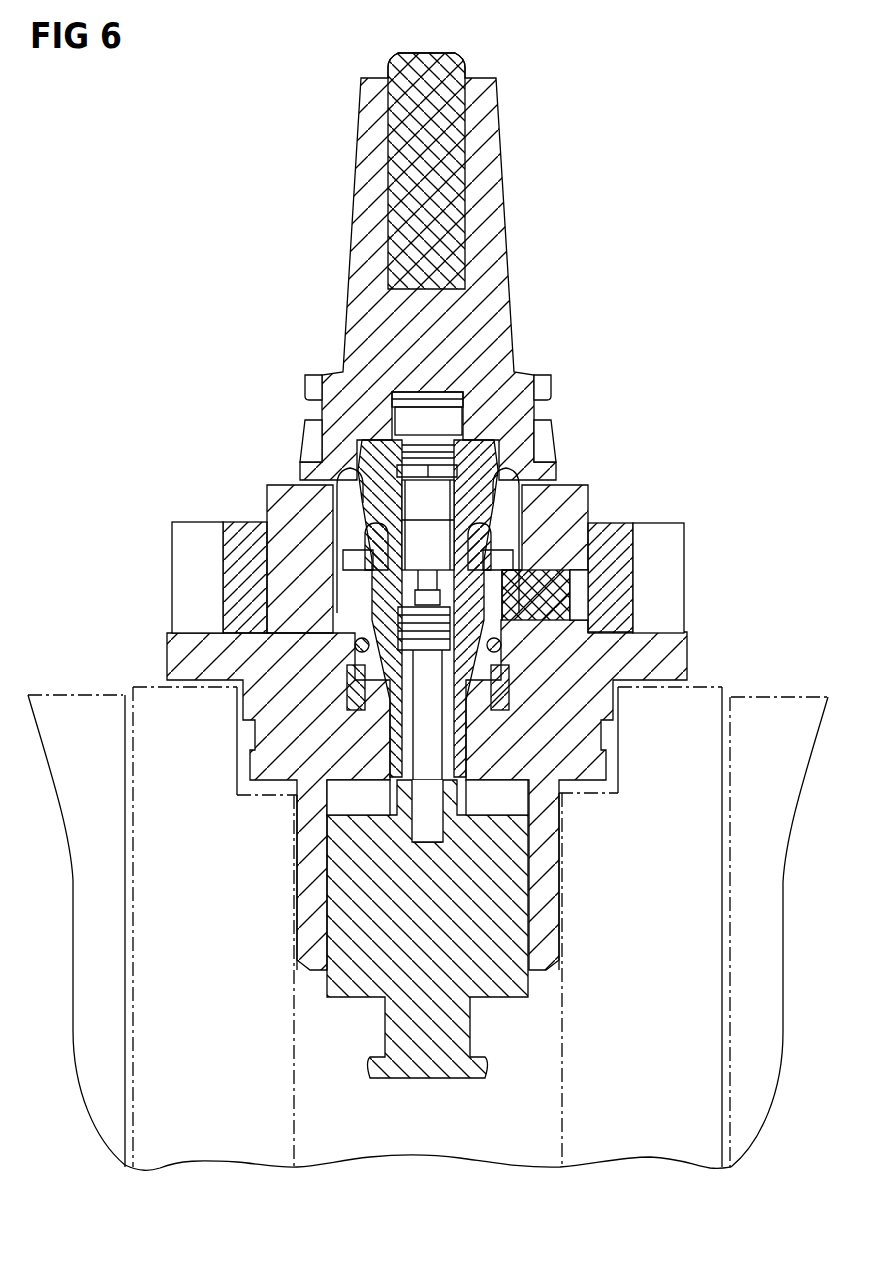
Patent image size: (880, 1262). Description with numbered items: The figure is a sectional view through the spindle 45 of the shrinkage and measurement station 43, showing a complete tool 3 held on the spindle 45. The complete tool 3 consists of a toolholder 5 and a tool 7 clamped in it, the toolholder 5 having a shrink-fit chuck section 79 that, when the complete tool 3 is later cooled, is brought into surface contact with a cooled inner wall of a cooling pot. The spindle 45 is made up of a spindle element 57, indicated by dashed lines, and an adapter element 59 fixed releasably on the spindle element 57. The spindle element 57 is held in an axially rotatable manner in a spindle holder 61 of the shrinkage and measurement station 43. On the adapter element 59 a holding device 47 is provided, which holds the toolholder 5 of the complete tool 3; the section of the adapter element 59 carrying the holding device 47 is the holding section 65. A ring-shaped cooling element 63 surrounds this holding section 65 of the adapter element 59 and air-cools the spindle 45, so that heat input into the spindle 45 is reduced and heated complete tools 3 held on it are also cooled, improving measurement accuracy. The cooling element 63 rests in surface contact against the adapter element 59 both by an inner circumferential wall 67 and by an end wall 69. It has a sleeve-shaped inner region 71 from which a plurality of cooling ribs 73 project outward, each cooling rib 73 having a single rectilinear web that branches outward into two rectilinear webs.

The complete tool 3 is at (585, 83).
The toolholder 5 is at (480, 158).
The tool 7 is at (443, 115).
The shrinkage and measurement station 43 is at (716, 112).
The spindle 45 is at (575, 503).
The holding device 47 is at (470, 428).
The spindle element 57 is at (714, 680).
The adapter element 59 is at (657, 640).
The spindle holder 61 is at (778, 661).
The cooling element 63 is at (668, 538).
The holding section 65 is at (230, 427).
The inner circumferential wall 67 is at (223, 545).
The end wall 69 is at (240, 617).
The inner region 71 is at (227, 523).
The cooling ribs 73 is at (193, 553).
The shrink-fit chuck section 79 is at (303, 173).